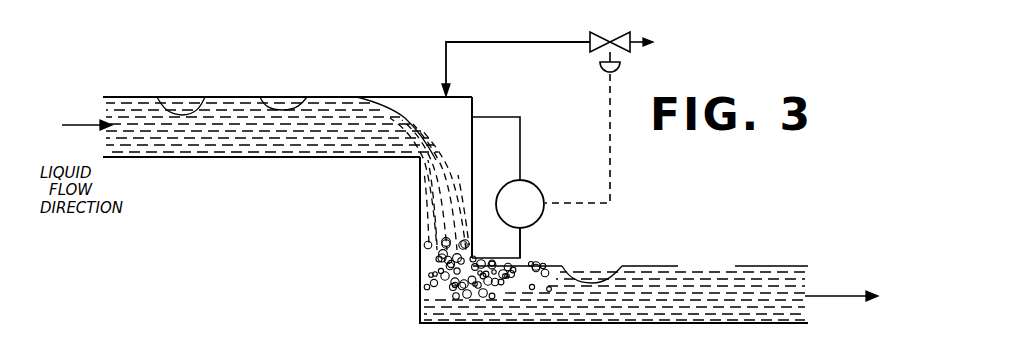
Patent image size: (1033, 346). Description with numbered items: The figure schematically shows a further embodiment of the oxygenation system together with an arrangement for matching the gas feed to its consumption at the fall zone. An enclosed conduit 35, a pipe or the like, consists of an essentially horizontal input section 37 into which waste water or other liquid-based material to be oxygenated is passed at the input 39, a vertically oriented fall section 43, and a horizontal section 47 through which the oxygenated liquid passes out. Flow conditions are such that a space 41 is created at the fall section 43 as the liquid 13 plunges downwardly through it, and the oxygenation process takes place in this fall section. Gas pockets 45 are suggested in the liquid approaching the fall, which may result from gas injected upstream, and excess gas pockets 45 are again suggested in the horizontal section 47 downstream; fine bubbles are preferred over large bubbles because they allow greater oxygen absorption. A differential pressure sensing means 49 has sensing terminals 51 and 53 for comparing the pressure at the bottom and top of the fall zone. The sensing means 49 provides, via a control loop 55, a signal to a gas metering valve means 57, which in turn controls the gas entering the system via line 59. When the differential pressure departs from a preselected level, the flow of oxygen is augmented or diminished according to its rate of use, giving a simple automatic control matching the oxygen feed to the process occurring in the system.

The liquid 13 is at (290, 160).
The enclosed conduit 35 is at (364, 88).
The horizontal input section 37 is at (259, 70).
The liquid input 39 is at (82, 122).
The space 41 is at (458, 108).
The fall section 43 is at (418, 236).
The gas pockets 45 is at (182, 107).
The horizontal section 47 is at (618, 324).
The differential pressure sensing means 49 is at (537, 192).
The sensing terminal 51 is at (522, 243).
The sensing terminal 53 is at (495, 120).
The control loop 55 is at (612, 172).
The gas metering valve means 57 is at (614, 36).
The line 59 is at (510, 40).